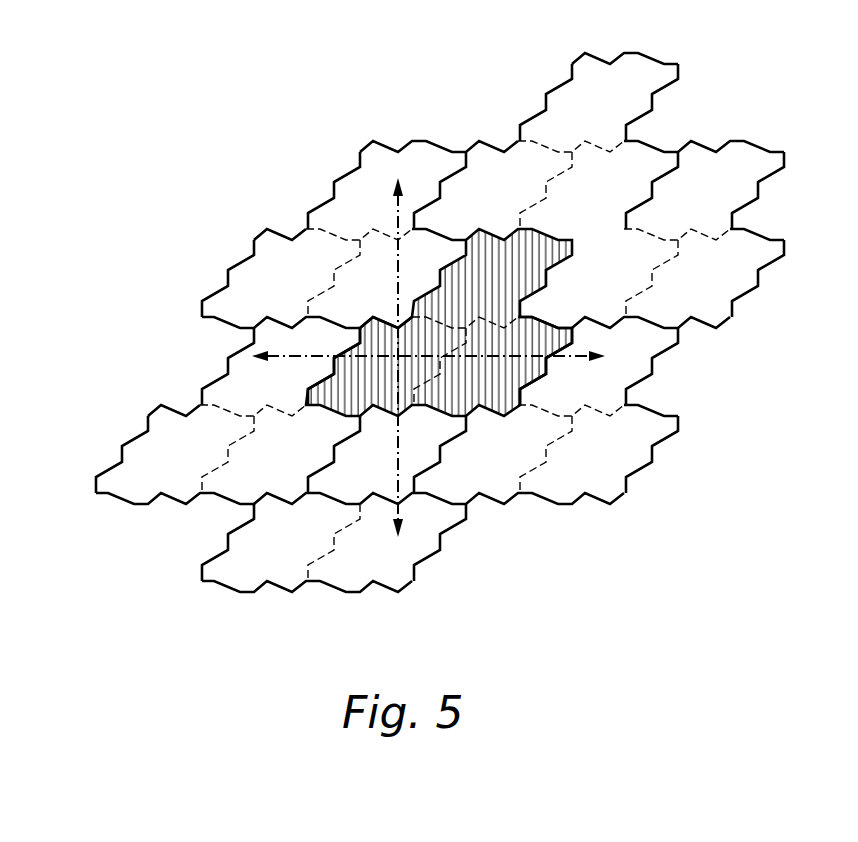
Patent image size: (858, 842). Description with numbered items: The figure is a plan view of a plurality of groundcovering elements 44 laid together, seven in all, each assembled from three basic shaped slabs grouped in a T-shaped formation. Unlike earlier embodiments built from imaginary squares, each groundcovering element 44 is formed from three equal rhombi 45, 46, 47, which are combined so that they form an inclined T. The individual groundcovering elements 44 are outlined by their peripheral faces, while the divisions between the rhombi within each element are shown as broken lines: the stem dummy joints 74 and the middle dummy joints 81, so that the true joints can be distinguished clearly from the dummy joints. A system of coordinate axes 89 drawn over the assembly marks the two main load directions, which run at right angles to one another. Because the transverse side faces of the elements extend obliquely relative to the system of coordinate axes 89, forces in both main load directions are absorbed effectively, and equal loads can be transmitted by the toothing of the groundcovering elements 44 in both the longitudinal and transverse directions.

The groundcovering element 44 is at (617, 97).
The rhombus 45 is at (194, 455).
The rhombus 46 is at (306, 450).
The rhombus 47 is at (288, 396).
The stem dummy joint 74 is at (233, 415).
The middle dummy joint 81 is at (220, 467).
The system of coordinate axes 89 is at (398, 357).